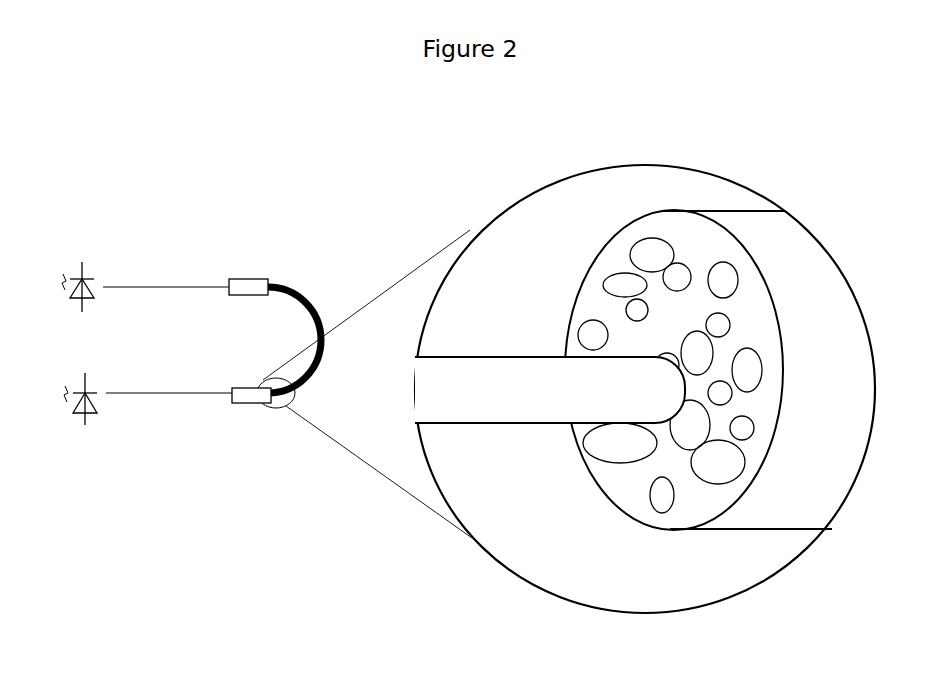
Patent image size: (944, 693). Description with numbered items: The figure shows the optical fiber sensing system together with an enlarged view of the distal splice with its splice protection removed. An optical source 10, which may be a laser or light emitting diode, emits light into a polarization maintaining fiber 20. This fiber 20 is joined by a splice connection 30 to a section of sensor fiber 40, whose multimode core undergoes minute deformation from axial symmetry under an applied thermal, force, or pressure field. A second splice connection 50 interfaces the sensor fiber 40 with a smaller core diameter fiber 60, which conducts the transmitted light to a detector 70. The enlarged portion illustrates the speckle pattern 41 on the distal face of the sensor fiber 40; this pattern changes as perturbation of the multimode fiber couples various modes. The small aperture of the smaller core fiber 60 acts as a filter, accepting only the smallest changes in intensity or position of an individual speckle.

The optical source 10 is at (78, 262).
The polarization maintaining fiber 20 is at (175, 285).
The splice connection 30 is at (266, 282).
The sensor fiber 40 is at (309, 382).
The speckle pattern 41 is at (722, 289).
The second splice connection 50 is at (252, 406).
The smaller core diameter fiber 60 is at (173, 400).
The detector 70 is at (72, 415).